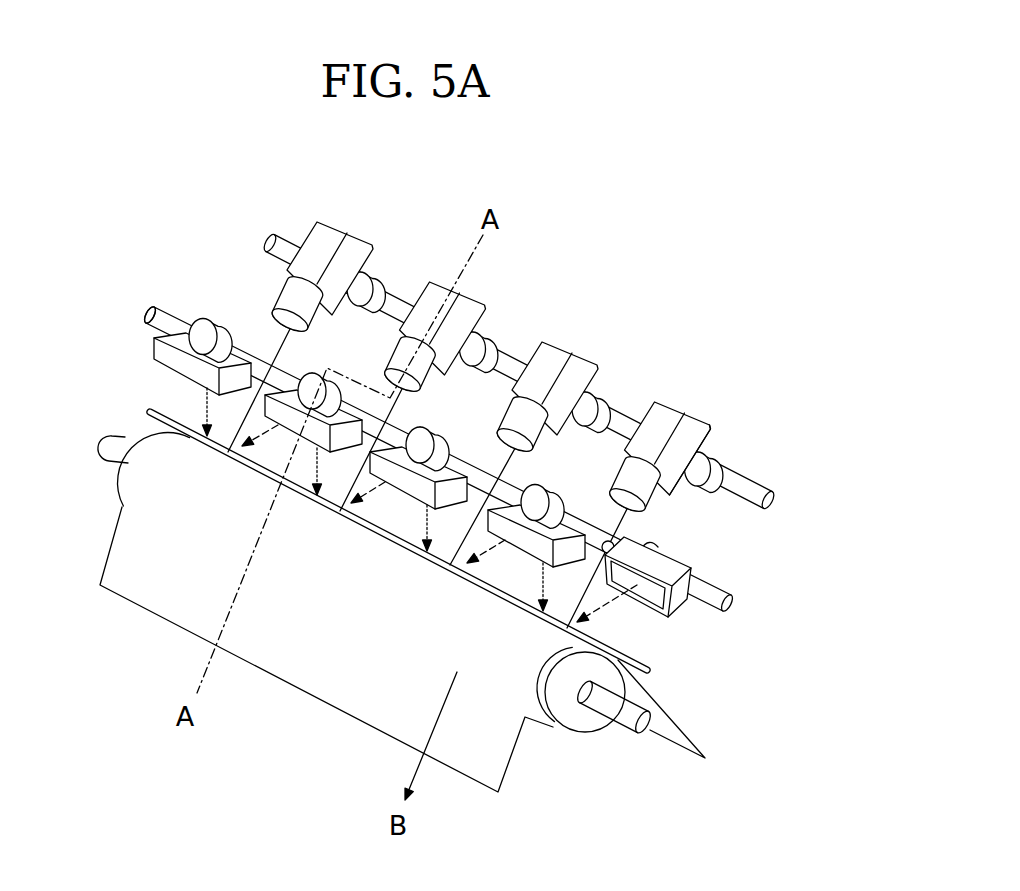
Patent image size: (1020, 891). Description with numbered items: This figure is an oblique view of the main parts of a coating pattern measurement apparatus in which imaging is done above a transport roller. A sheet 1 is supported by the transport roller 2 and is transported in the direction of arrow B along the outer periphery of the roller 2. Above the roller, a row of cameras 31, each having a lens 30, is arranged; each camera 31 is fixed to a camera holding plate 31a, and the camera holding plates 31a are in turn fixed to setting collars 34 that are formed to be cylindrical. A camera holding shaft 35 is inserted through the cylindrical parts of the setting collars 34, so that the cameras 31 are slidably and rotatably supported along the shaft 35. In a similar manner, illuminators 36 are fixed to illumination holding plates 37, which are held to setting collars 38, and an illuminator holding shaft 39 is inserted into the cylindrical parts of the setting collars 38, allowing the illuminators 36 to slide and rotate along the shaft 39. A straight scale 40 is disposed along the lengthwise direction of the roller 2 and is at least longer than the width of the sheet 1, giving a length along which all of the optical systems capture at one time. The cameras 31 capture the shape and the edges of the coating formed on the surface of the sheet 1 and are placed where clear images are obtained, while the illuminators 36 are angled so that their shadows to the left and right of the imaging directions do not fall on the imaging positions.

The sheet 1 is at (360, 684).
The transport roller 2 is at (568, 722).
The lens 30 is at (657, 492).
The camera 31 is at (655, 398).
The camera holding plate 31a is at (702, 420).
The setting collar 34 is at (712, 449).
The camera holding shaft 35 is at (764, 491).
The illuminator 36 is at (172, 370).
The illumination holding plate 37 is at (152, 318).
The setting collar 38 is at (207, 318).
The illuminator holding shaft 39 is at (165, 310).
The straight scale 40 is at (660, 657).